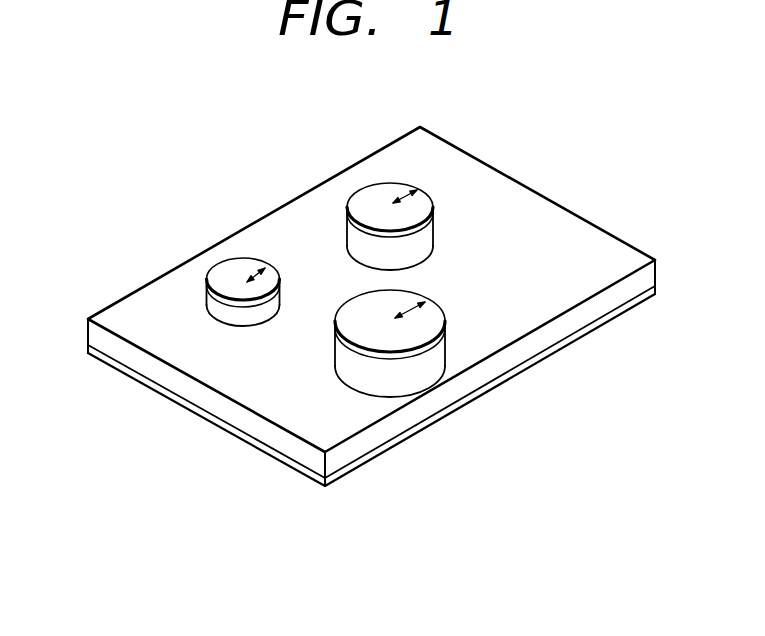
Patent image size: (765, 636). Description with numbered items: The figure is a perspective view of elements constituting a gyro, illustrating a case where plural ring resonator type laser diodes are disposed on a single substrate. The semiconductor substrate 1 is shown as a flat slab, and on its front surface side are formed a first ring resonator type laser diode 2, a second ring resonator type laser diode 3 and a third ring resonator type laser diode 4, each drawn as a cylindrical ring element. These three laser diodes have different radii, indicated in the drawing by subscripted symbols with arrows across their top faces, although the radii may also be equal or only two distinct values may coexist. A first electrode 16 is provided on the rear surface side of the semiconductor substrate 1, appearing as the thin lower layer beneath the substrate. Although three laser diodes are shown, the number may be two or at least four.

The semiconductor substrate 1 is at (609, 243).
The first ring resonator type laser diode 2 is at (355, 195).
The second ring resonator type laser diode 3 is at (210, 272).
The third ring resonator type laser diode 4 is at (435, 325).
The first electrode 16 is at (100, 358).